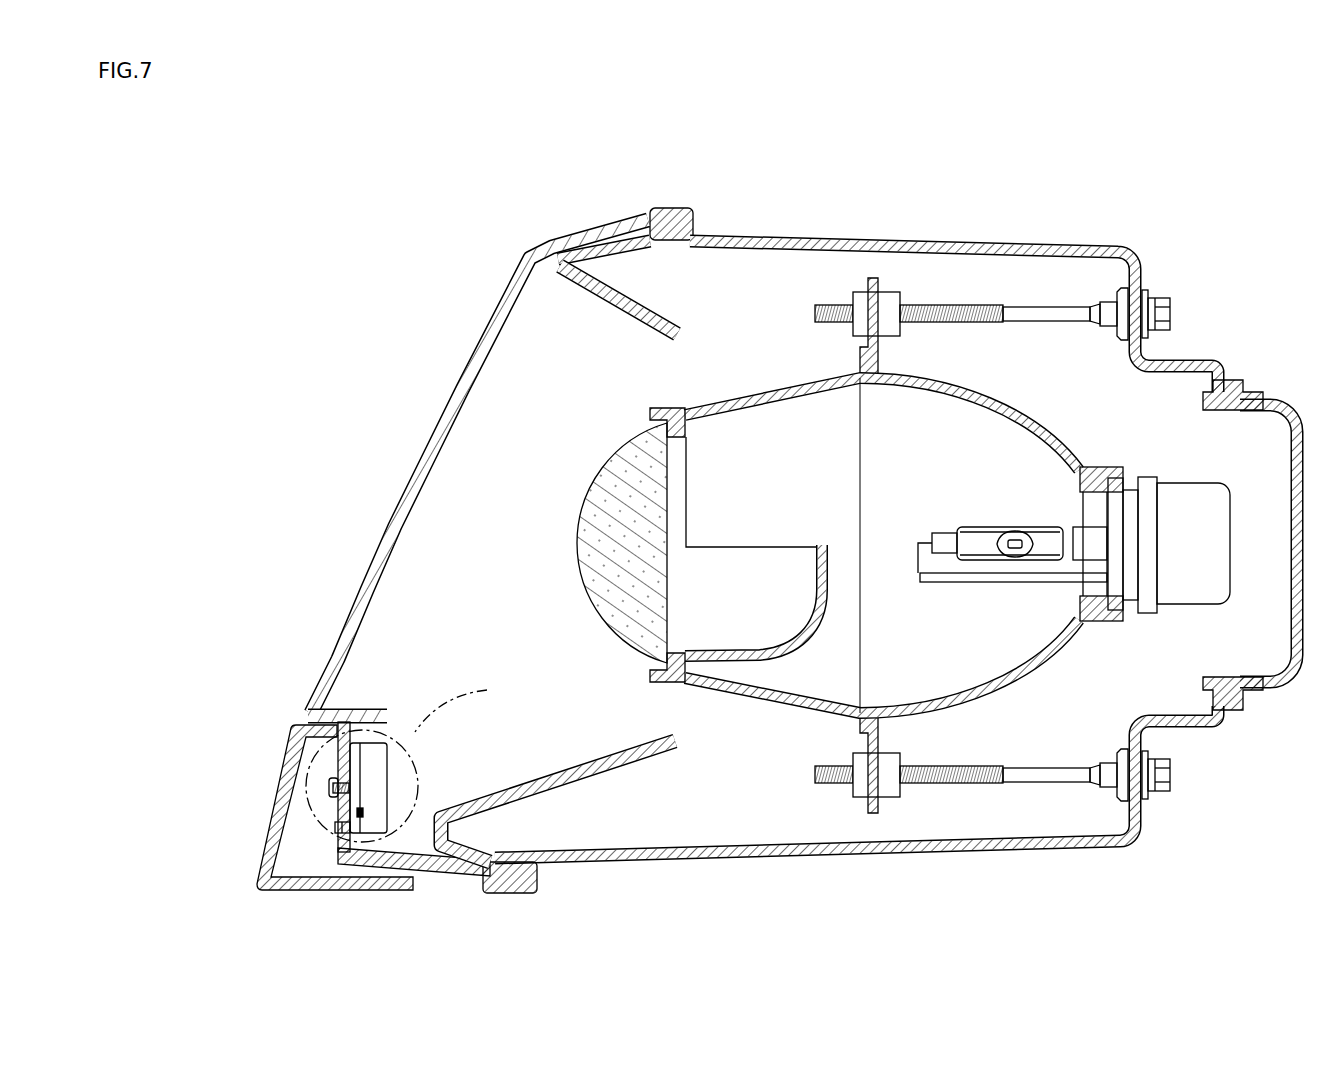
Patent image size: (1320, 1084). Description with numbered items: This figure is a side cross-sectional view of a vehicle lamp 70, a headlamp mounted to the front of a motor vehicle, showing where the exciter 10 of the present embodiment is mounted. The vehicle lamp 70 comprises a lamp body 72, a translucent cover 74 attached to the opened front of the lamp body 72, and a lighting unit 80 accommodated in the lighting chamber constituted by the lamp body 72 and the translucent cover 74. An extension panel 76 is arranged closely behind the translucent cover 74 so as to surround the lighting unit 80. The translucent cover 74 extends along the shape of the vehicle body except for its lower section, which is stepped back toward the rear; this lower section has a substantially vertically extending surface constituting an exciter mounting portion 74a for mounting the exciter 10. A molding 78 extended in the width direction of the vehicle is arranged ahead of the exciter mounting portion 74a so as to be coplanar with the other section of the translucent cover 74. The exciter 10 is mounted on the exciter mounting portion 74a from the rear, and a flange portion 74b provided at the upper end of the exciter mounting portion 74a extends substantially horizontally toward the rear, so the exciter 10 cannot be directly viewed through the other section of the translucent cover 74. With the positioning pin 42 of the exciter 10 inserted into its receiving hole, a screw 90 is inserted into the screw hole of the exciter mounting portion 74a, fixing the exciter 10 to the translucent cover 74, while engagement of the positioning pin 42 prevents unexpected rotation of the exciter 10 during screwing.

The vehicle lamp 70 is at (405, 208).
The lamp body 72 is at (1025, 242).
The translucent cover 74 is at (376, 490).
The exciter mounting portion 74a is at (330, 808).
The flange portion 74b is at (380, 714).
The extension panel 76 is at (630, 768).
The molding 78 is at (282, 733).
The lighting unit 80 is at (662, 370).
The exciter 10 is at (395, 772).
The screw 90 is at (330, 787).
The positioning pin 42 is at (335, 828).